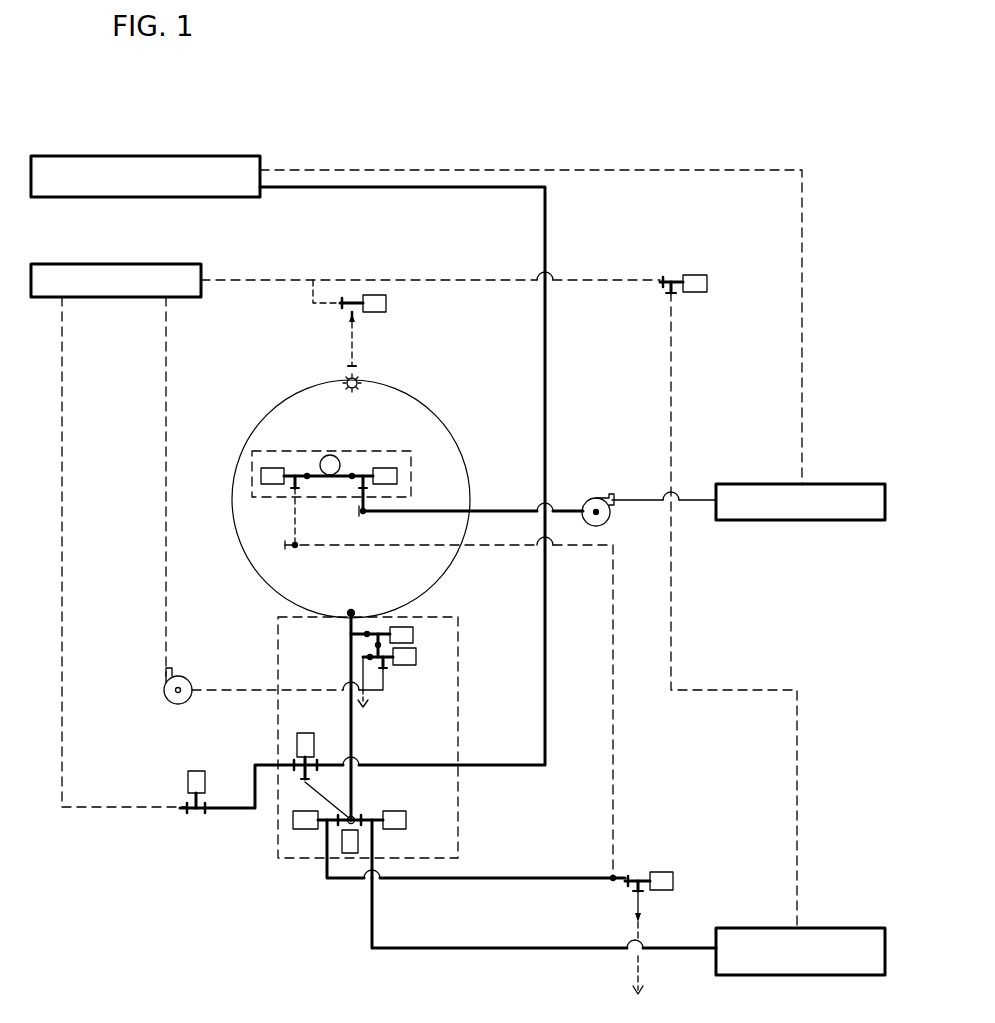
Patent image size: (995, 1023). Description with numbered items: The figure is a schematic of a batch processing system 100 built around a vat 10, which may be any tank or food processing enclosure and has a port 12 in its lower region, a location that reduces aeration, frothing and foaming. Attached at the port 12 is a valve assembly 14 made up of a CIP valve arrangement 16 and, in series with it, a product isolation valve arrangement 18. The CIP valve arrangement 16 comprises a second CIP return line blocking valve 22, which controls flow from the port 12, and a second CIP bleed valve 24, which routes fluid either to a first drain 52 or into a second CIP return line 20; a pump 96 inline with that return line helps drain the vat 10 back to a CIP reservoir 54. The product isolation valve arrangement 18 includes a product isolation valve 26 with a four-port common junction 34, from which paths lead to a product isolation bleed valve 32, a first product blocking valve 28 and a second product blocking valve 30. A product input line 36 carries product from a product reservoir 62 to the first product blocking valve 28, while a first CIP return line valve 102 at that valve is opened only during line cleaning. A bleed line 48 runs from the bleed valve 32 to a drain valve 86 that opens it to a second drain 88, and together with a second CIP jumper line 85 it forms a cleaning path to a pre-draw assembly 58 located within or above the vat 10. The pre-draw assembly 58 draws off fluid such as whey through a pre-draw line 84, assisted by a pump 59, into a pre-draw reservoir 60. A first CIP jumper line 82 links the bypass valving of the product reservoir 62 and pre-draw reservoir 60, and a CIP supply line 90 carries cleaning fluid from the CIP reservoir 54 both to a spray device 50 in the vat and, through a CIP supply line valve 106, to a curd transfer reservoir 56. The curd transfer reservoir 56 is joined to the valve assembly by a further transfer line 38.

The batch processing system 100 is at (546, 113).
The vat 10 is at (441, 421).
The port 12 is at (350, 609).
The valve assembly 14 is at (456, 727).
The CIP valve arrangement 16 is at (418, 690).
The product isolation valve arrangement 18 is at (395, 803).
The second CIP return line 20 is at (166, 460).
The second CIP return line blocking valve 22 is at (414, 637).
The second CIP bleed valve 24 is at (417, 657).
The product isolation valve 26 is at (352, 852).
The first product blocking valve 28 is at (304, 733).
The second product blocking valve 30 is at (406, 826).
The product isolation bleed valve 32 is at (293, 822).
The common junction 34 is at (356, 815).
The product input line 36 is at (493, 766).
The curd transfer line 38 is at (438, 949).
The bleed line 48 is at (327, 845).
The CIP spray device 50 is at (349, 378).
The first drain 52 is at (365, 722).
The CIP reservoir 54 is at (150, 264).
The curd transfer reservoir 56 is at (792, 976).
The pre-draw assembly 58 is at (331, 461).
The pump 59 is at (597, 497).
The pre-draw reservoir 60 is at (800, 521).
The product reservoir 62 is at (216, 157).
The first CIP jumper line 82 is at (806, 208).
The pre-draw line 84 is at (497, 510).
The second CIP jumper line 85 is at (616, 702).
The drain valve 86 is at (662, 872).
The second drain 88 is at (644, 1001).
The CIP supply line 90 is at (430, 283).
The pump 96 is at (164, 690).
The first CIP return line valve 102 is at (197, 771).
The CIP supply line valve 106 is at (700, 275).